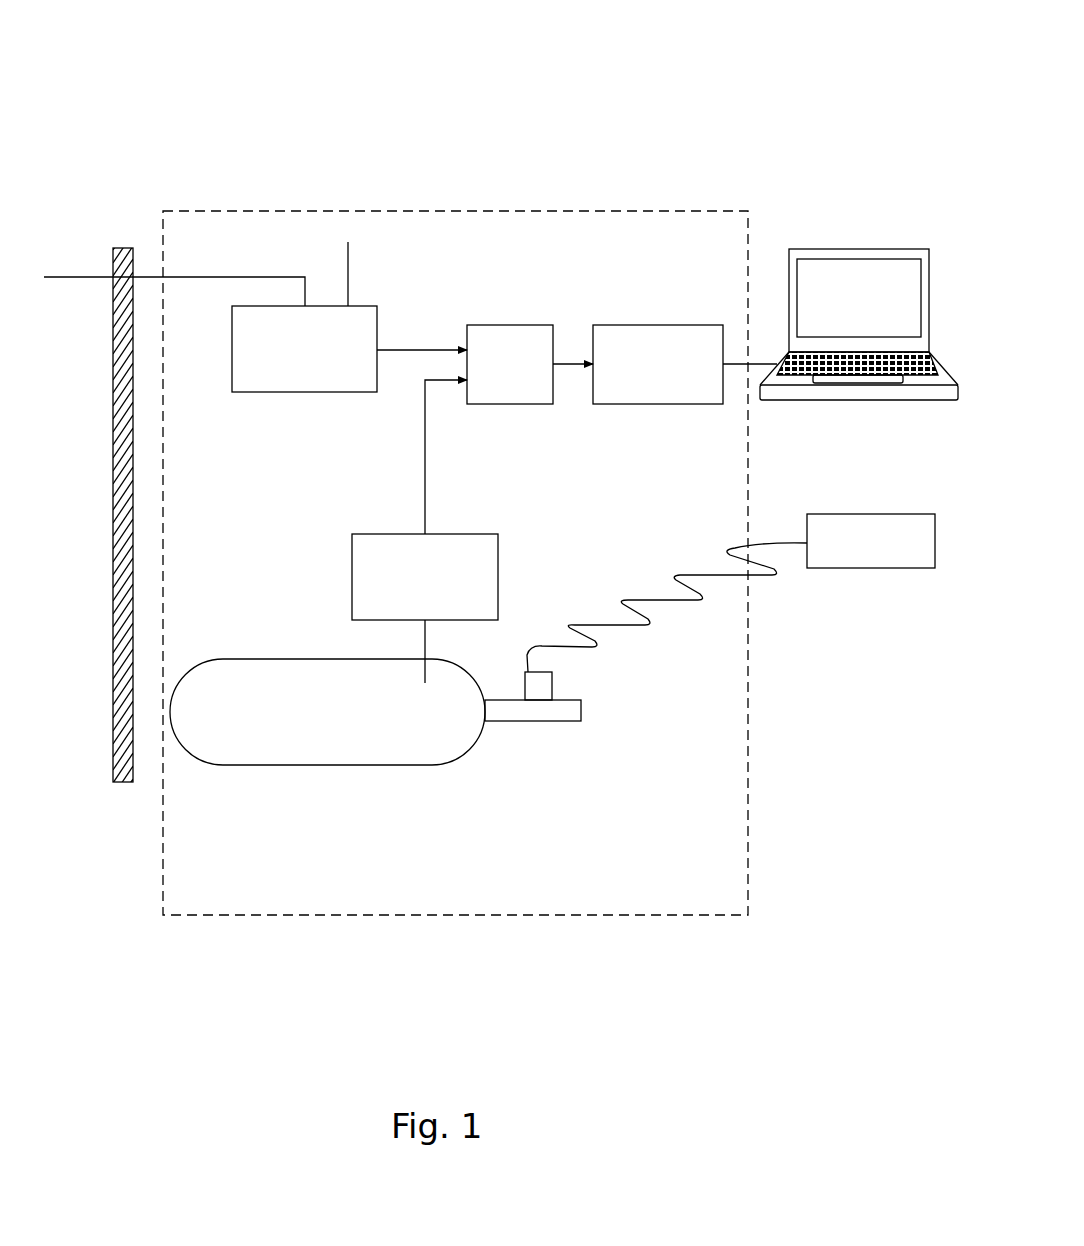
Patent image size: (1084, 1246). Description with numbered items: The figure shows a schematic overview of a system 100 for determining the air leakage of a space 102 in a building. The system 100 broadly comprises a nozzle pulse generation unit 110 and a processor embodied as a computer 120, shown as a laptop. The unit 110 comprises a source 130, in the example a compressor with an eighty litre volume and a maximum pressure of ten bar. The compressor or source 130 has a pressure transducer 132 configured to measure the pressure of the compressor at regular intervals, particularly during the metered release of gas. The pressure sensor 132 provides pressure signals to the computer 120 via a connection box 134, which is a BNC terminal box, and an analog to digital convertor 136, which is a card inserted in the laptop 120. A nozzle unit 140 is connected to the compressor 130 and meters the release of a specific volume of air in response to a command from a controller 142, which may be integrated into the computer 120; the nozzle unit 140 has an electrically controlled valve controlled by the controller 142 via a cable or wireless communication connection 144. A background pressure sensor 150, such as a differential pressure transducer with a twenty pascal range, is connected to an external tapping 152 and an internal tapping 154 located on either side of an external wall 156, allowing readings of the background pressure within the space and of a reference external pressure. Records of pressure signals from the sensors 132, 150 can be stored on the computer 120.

The system 100 is at (830, 100).
The space 102 is at (676, 906).
The nozzle pulse generation unit 110 is at (623, 248).
The computer 120 is at (830, 393).
The source 130 is at (349, 762).
The pressure transducer 132 is at (362, 563).
The connection box 134 is at (491, 343).
The analog to digital convertor 136 is at (661, 353).
The nozzle unit 140 is at (565, 715).
The controller 142 is at (868, 560).
The wireless communication connection 144 is at (667, 605).
The background pressure sensor 150 is at (378, 317).
The external tapping 152 is at (62, 271).
The internal tapping 154 is at (350, 257).
The external wall 156 is at (123, 250).